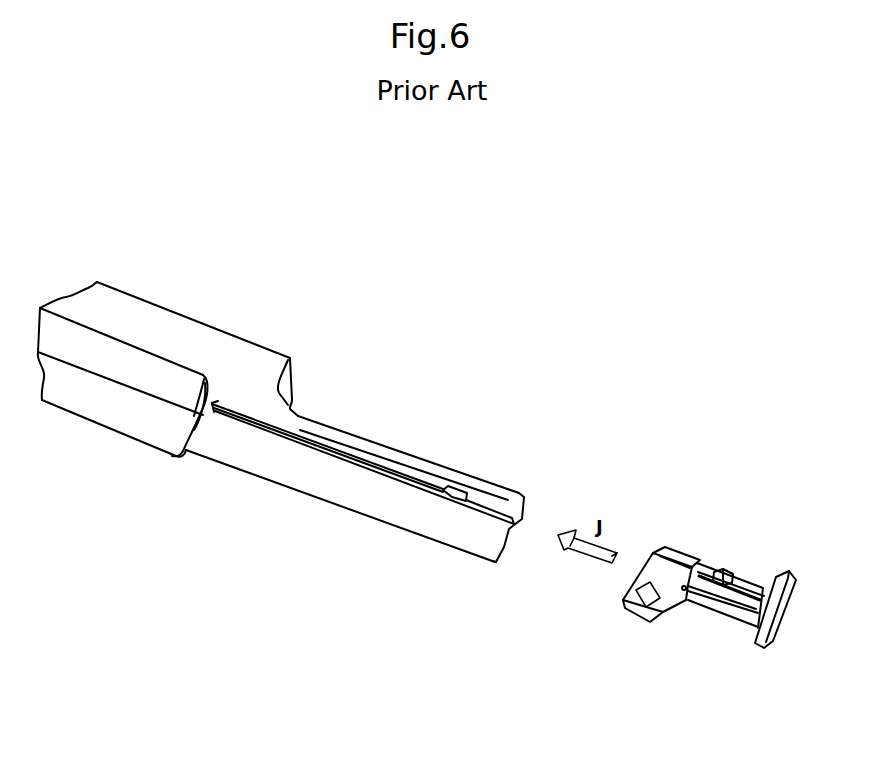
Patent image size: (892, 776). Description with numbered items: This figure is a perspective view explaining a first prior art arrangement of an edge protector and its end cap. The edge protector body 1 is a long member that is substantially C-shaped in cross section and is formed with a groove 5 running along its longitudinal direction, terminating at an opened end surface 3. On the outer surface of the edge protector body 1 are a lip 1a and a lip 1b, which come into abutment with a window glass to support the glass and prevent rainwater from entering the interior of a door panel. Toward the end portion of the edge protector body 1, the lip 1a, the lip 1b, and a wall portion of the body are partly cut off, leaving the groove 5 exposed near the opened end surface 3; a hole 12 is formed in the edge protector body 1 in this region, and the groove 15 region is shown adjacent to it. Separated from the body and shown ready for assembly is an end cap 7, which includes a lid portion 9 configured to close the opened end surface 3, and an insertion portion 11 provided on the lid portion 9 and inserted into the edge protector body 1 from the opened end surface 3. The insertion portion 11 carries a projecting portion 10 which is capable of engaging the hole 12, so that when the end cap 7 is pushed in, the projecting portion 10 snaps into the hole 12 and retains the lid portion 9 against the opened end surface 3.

The edge protector body 1 is at (291, 355).
The lip 1a is at (192, 332).
The lip 1b is at (140, 425).
The opened end surface 3 is at (523, 508).
The groove 5 is at (478, 518).
The hole 12 is at (458, 488).
The guide groove 15 is at (462, 500).
The end cap 7 is at (700, 669).
The lid portion 9 is at (765, 627).
The projecting portion 10 is at (727, 570).
The insertion portion 11 is at (740, 617).